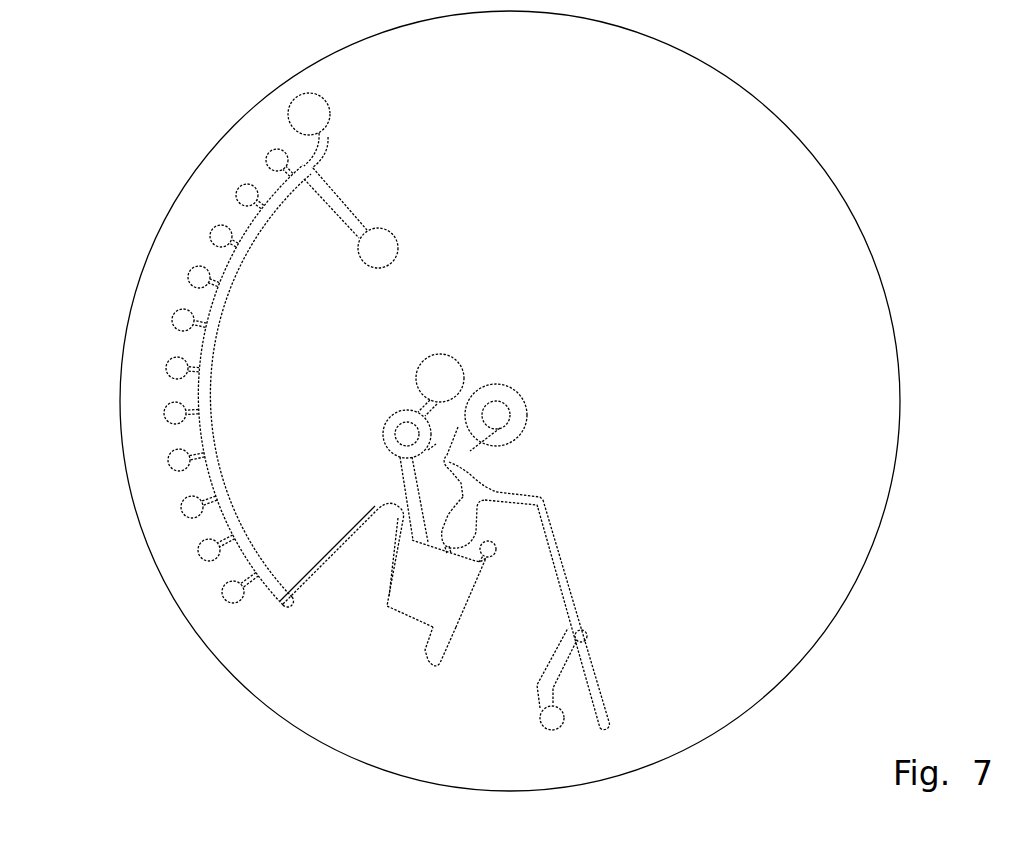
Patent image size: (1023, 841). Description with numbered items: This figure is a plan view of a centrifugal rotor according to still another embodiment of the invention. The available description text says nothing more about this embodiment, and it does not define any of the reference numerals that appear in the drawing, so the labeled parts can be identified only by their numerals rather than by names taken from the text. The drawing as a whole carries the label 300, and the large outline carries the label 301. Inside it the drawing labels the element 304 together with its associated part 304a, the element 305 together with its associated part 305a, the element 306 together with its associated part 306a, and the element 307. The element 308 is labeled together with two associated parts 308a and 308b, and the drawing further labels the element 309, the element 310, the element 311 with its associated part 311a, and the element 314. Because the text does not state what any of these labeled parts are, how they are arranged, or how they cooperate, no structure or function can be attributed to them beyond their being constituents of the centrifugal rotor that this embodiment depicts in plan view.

The clock movement assembly 300 is at (990, 59).
The housing 301 is at (800, 170).
The pinion wheel 304 is at (433, 362).
The pinion arm 304a is at (406, 480).
The lever 305 is at (598, 680).
The lever pivot pin 305a is at (552, 718).
The pivot arm 306 is at (470, 453).
The pivot bearing 306a is at (518, 405).
The spring 307 is at (467, 520).
The slide body 308 is at (467, 607).
The slide arm end 308a is at (435, 664).
The slide arm 308b is at (313, 575).
The pivot wheel 309 is at (330, 115).
The ratchet arc 310 is at (210, 350).
The wheel 311 is at (387, 247).
The wheel arm 311a is at (338, 205).
The end pin 314 is at (237, 602).